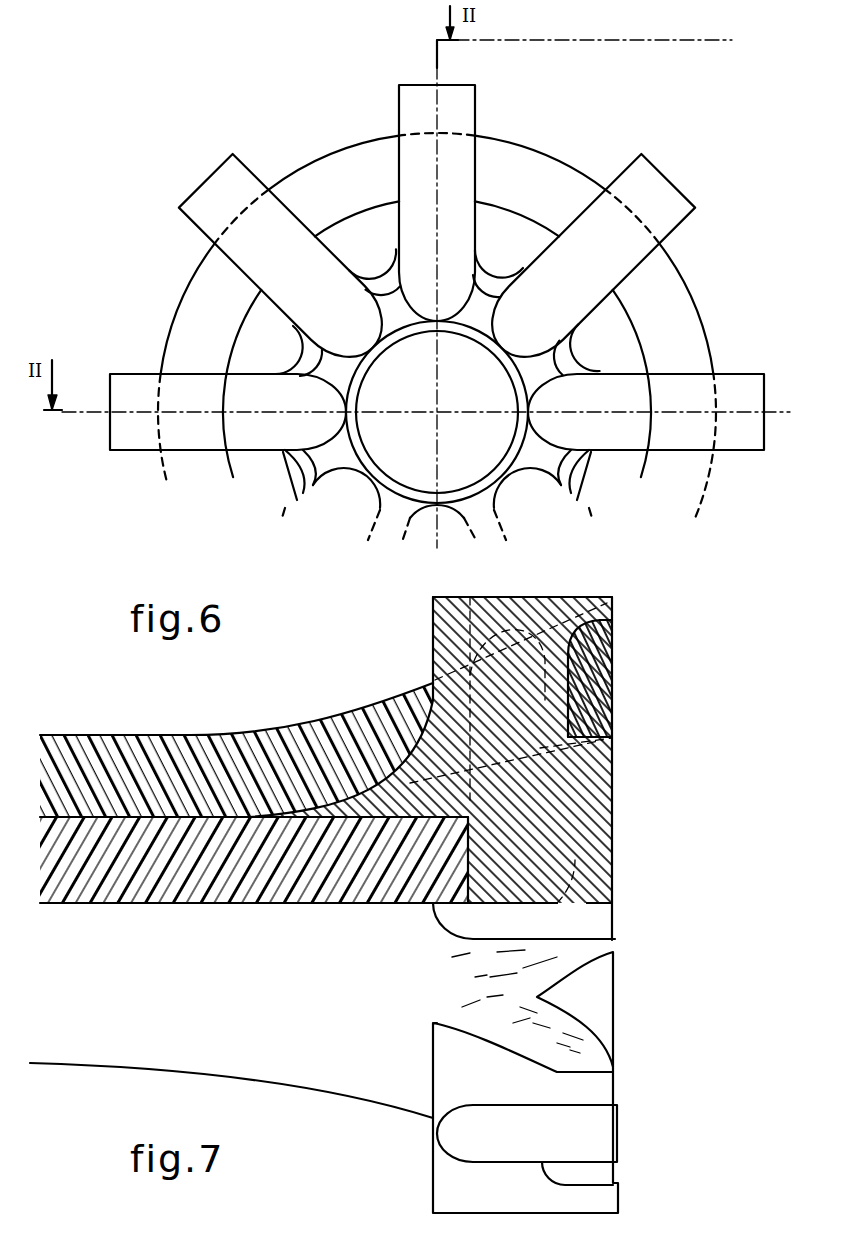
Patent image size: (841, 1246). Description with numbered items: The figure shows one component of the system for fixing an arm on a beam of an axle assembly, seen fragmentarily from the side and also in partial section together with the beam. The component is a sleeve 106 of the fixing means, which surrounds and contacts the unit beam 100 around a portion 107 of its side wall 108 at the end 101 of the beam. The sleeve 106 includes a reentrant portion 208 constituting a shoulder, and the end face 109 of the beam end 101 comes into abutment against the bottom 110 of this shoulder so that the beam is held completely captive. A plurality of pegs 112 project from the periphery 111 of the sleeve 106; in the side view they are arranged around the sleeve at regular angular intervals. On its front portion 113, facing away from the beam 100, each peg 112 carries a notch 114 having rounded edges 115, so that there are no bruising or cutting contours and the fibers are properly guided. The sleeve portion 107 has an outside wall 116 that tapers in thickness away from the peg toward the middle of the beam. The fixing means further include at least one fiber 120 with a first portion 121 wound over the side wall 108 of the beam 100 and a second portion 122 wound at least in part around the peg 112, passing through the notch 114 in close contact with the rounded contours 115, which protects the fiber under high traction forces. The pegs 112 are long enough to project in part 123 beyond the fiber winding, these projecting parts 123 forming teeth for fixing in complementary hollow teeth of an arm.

In FIG. 7, the unit beam 100 is at (204, 1051).
In FIG. 7, the end of the beam 101 is at (405, 1080).
In FIG. 7, the sleeve 106 is at (597, 786).
In FIG. 6, the portion of the sleeve 107 is at (385, 343).
In FIG. 7, the portion of the sleeve 107 is at (375, 825).
In FIG. 6, the side wall of the beam 108 is at (500, 472).
In FIG. 7, the side wall of the beam 108 is at (189, 902).
In FIG. 7, the end face of the beam 109 is at (470, 903).
In FIG. 6, the bottom of the shoulder 110 is at (510, 432).
In FIG. 7, the bottom of the shoulder 110 is at (463, 857).
In FIG. 7, the periphery of the sleeve 111 is at (612, 740).
In FIG. 6, the peg 112 is at (138, 388).
In FIG. 7, the peg 112 is at (561, 594).
In FIG. 7, the front portion of the peg 113 is at (612, 612).
In FIG. 7, the notch 114 is at (603, 672).
In FIG. 7, the rounded edges of the notch 115 is at (530, 628).
In FIG. 7, the outside wall of the sleeve portion 116 is at (332, 775).
In FIG. 7, the fiber 120 is at (110, 733).
In FIG. 7, the first portion of the fiber 121 is at (223, 735).
In FIG. 7, the second portion of the fiber 122 is at (602, 694).
In FIG. 7, the projecting part of the peg 123 is at (433, 613).
In FIG. 7, the reentrant portion 208 is at (590, 890).